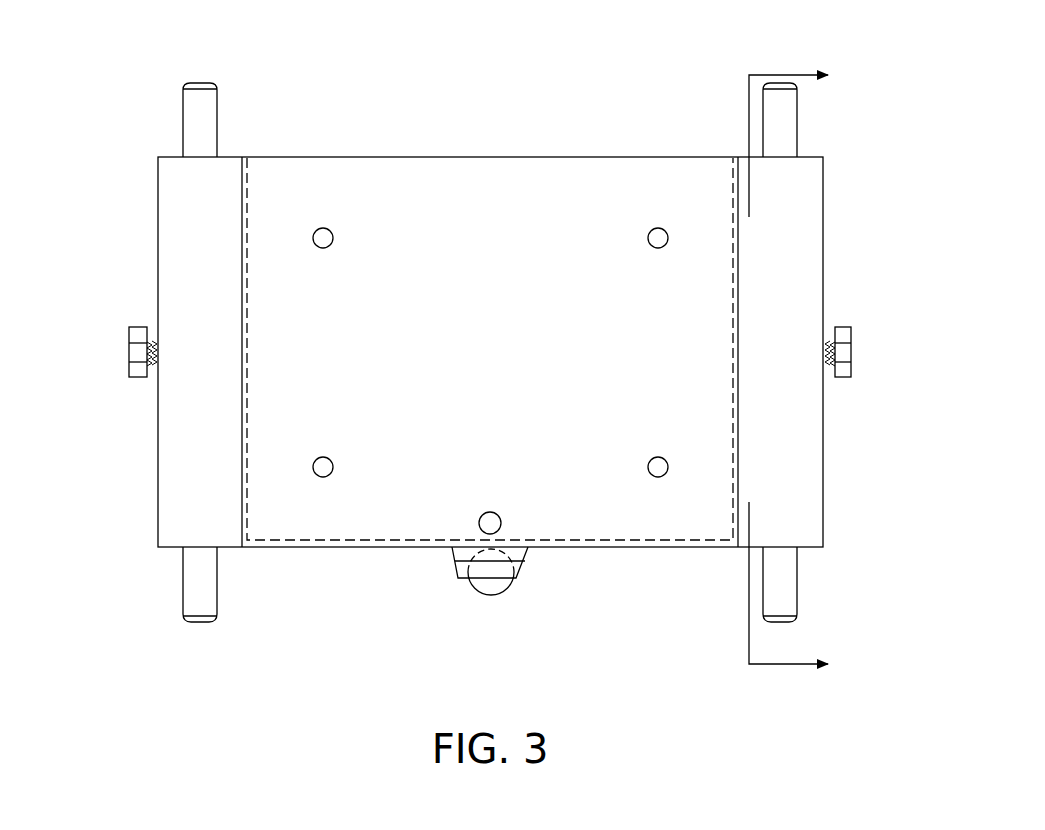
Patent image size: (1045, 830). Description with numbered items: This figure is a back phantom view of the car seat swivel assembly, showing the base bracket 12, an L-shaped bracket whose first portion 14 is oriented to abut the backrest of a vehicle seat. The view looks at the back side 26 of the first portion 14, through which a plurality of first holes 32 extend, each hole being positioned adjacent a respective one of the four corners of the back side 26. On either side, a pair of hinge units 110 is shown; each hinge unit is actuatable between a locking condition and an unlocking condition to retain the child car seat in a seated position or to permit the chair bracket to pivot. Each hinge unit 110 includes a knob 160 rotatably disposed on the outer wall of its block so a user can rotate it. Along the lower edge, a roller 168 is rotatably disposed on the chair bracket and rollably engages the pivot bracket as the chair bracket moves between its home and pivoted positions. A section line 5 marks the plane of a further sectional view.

The mounting assembly 12 is at (455, 130).
The mounting plate 14 is at (570, 157).
The inner panel 26 is at (518, 198).
The mounting holes 32 is at (323, 222).
The side bracket 110 is at (132, 283).
The adjustment knob 160 is at (128, 355).
The latch 168 is at (488, 595).
The section line 5- 5 is at (803, 370).